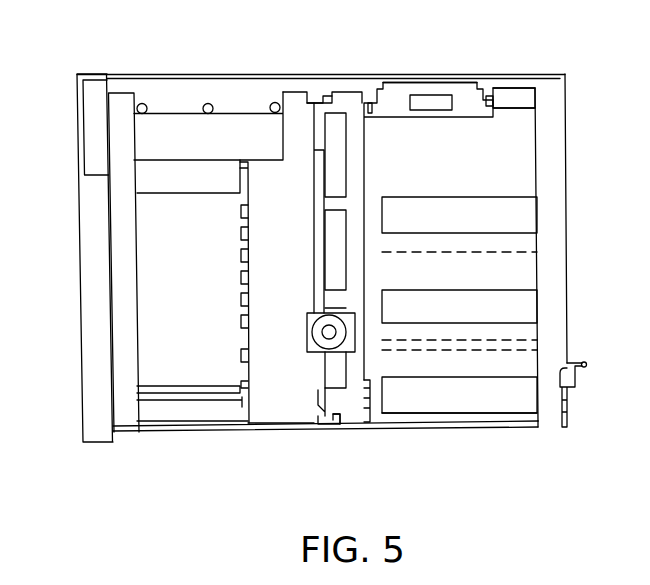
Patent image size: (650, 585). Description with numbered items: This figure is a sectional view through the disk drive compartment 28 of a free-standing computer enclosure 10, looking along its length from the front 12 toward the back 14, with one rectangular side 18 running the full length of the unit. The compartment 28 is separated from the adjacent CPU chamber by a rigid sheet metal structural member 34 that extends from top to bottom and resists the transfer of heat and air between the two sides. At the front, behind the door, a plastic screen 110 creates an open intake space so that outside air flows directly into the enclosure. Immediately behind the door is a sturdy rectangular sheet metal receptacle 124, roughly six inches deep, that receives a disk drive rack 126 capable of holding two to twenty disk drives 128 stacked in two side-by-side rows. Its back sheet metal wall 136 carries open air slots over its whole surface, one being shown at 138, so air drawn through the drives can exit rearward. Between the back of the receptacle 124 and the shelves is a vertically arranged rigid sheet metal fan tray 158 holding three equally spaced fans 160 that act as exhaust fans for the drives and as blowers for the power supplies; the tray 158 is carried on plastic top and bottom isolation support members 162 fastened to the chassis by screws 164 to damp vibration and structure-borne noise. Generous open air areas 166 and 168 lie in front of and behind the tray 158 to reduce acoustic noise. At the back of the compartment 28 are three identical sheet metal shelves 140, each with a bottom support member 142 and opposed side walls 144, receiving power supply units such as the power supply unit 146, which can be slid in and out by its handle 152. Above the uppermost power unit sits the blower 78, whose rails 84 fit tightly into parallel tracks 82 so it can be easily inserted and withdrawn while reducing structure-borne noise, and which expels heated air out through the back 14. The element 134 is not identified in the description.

The enclosure 10 is at (186, 76).
The front 12 is at (79, 252).
The back 14 is at (552, 213).
The side 18 is at (162, 75).
The compartment 28 is at (518, 152).
The structural member 34 is at (260, 380).
The blower 78 is at (430, 86).
The tracks 82 is at (371, 103).
The rails 84 is at (370, 106).
The plastic screen 110 is at (81, 314).
The receptacle 124 is at (153, 363).
The disk drive rack 126 is at (178, 426).
The disk drives 128 is at (140, 411).
The mounting bracket 134 is at (93, 187).
The back sheet metal wall 136 is at (250, 315).
The open air slot 138 is at (245, 278).
The shelves 140 is at (458, 340).
The bottom support member 142 is at (398, 428).
The side walls 144 is at (546, 418).
The power supply unit 146 is at (490, 402).
The handle 152 is at (572, 363).
The fan tray 158 is at (313, 163).
The fans 160 is at (327, 137).
The isolation support members 162 is at (325, 97).
The screws 164 is at (340, 421).
The open air area 166 is at (297, 279).
The open air area 168 is at (385, 70).